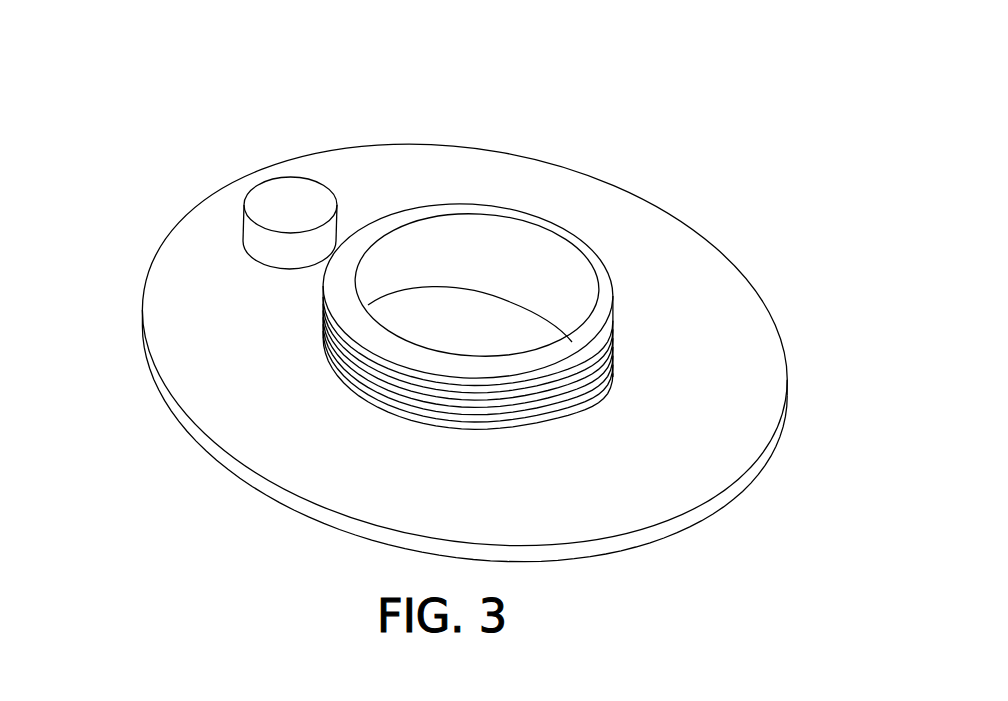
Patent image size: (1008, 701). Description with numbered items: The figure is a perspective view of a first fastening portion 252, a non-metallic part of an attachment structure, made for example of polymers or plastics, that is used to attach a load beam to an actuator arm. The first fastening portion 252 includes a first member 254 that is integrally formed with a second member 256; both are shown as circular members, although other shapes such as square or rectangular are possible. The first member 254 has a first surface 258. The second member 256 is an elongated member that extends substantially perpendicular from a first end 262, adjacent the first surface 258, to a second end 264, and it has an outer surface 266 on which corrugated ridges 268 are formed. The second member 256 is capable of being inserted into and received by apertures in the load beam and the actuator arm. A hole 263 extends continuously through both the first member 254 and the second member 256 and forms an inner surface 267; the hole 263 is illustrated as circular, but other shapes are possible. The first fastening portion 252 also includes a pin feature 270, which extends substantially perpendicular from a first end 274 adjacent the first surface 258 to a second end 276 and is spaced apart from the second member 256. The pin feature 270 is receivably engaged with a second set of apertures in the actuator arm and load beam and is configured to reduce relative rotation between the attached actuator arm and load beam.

The first fastening portion 252 is at (460, 307).
The first member 254 is at (465, 345).
The second member 256 is at (443, 267).
The first surface 258 is at (697, 273).
The first end 262 is at (544, 415).
The hole 263 is at (476, 196).
The second end 264 is at (548, 228).
The outer surface 266 is at (425, 393).
The inner surface 267 is at (437, 247).
The corrugated ridges 268 is at (398, 380).
The pin feature 270 is at (197, 182).
The first end 274 is at (262, 262).
The second end 276 is at (288, 193).